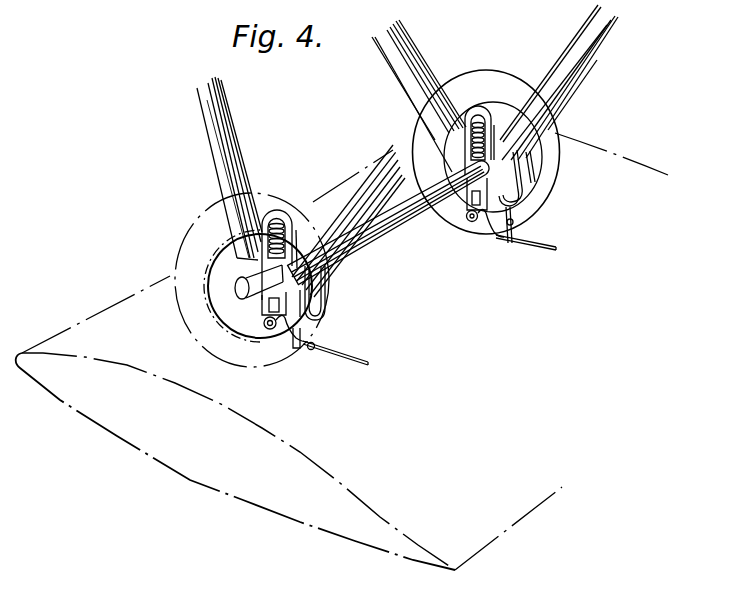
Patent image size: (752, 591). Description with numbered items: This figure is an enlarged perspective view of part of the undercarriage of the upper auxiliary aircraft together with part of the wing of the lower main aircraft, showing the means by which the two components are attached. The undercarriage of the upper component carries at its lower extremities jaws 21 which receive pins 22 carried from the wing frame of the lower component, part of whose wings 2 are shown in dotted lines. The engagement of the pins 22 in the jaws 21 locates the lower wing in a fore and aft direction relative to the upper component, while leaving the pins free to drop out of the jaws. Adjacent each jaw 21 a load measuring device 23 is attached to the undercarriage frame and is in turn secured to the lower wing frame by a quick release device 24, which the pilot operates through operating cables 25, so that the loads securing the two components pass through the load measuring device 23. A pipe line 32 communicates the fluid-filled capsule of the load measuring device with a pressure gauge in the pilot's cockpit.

The wings 2 is at (192, 467).
The jaws 21 is at (266, 308).
The pins 22 is at (268, 330).
The load measuring device 23 is at (297, 342).
The quick release device 24 is at (318, 346).
The operating cables 25 is at (370, 365).
The pipe line 32 is at (585, 86).